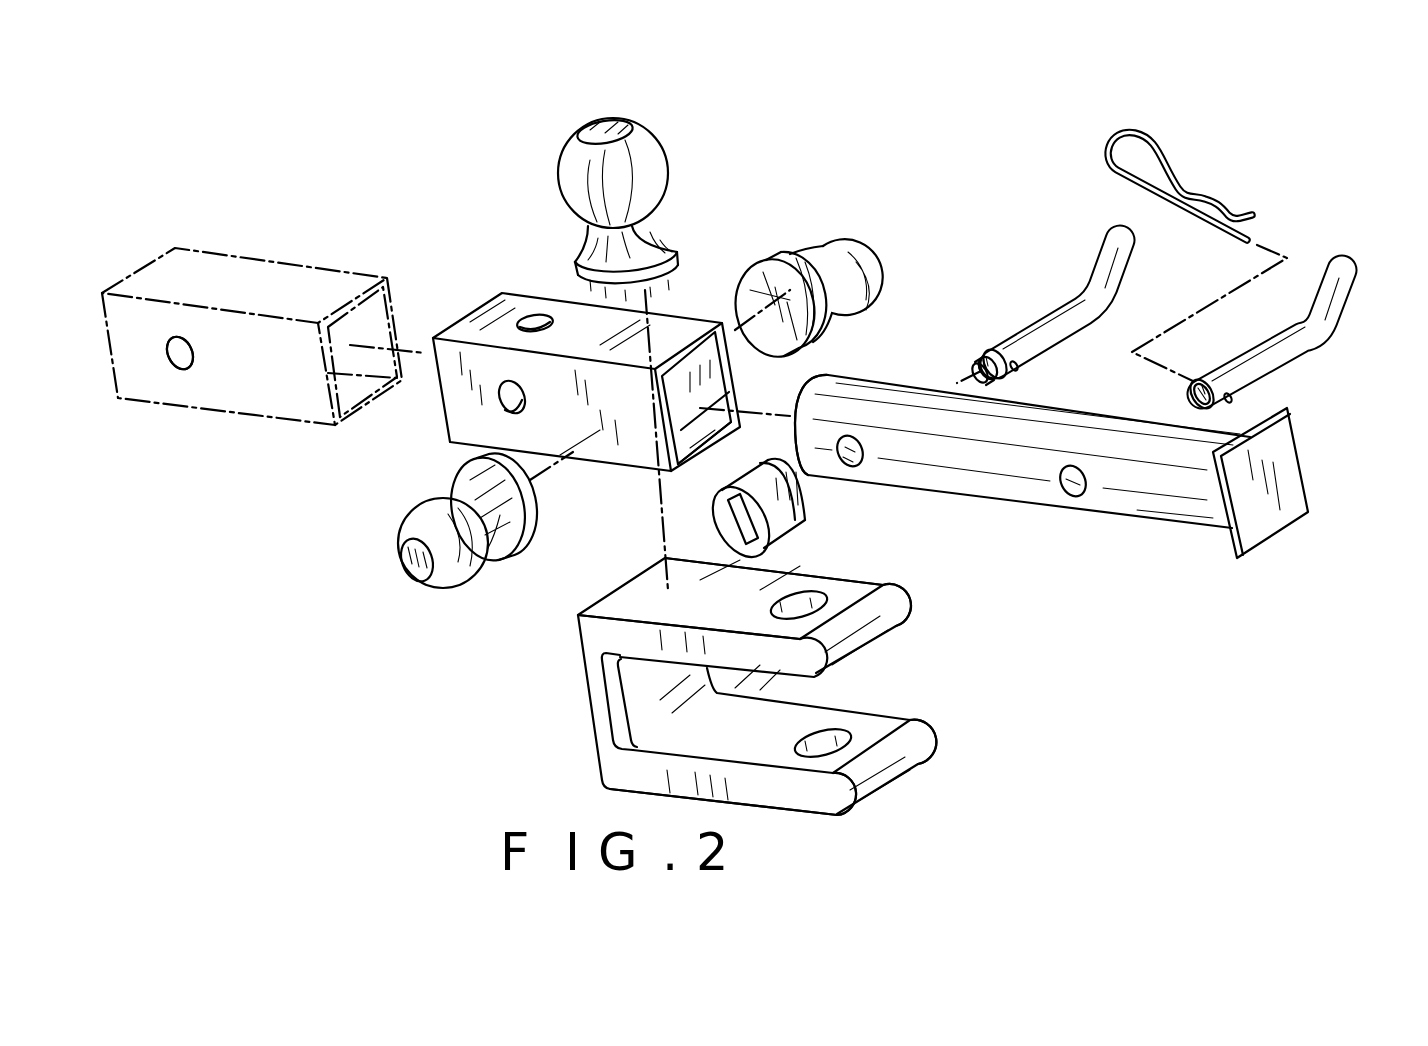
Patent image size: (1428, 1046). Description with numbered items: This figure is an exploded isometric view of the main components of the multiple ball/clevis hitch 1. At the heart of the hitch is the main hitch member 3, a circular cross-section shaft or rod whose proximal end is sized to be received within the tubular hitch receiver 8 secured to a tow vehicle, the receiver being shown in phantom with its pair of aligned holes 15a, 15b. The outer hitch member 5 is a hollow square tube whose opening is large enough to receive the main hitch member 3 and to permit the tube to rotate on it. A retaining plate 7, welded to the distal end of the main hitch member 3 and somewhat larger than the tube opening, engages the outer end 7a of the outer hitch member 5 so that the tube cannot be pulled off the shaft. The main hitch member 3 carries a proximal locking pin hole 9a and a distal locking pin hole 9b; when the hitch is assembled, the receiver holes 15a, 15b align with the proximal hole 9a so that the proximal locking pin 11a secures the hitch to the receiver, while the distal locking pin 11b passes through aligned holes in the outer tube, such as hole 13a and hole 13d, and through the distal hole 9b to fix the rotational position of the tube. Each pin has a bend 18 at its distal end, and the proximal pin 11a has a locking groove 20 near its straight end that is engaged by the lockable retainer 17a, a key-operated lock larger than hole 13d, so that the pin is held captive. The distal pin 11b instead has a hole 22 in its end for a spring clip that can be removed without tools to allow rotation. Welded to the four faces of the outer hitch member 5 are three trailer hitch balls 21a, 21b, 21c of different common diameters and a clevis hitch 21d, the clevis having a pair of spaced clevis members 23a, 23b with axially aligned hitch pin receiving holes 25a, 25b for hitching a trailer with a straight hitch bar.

The multiple ball/clevis hitch 1 is at (878, 112).
The main hitch member 3 is at (1018, 505).
The outer hitch member 5 is at (641, 472).
The retaining plate 7 is at (1282, 472).
The outer end of outer hitch member 7a is at (738, 395).
The hitch receiver 8 is at (218, 250).
The proximal locking pin hole 9a is at (857, 465).
The distal locking pin hole 9b is at (1082, 493).
The proximal locking pin 11a is at (1065, 293).
The distal locking pin 11b is at (1310, 357).
The locking pin hole 13a is at (528, 312).
The locking pin hole 13d is at (500, 408).
The receiver hole 15a is at (183, 353).
The receiver hole 15b is at (193, 410).
The locking retainer 17a is at (790, 530).
The bend 18 is at (1132, 268).
The locking groove 20 is at (982, 358).
The trailer hitch ball 21a is at (828, 237).
The trailer hitch ball 21b is at (433, 590).
The trailer hitch ball 21c is at (570, 135).
The clevis hitch 21d is at (907, 717).
The hole 22 is at (1016, 367).
The clevis member 23a is at (900, 603).
The clevis member 23b is at (880, 766).
The hitch pin receiving hole 25a is at (805, 600).
The hitch pin receiving hole 25b is at (838, 735).